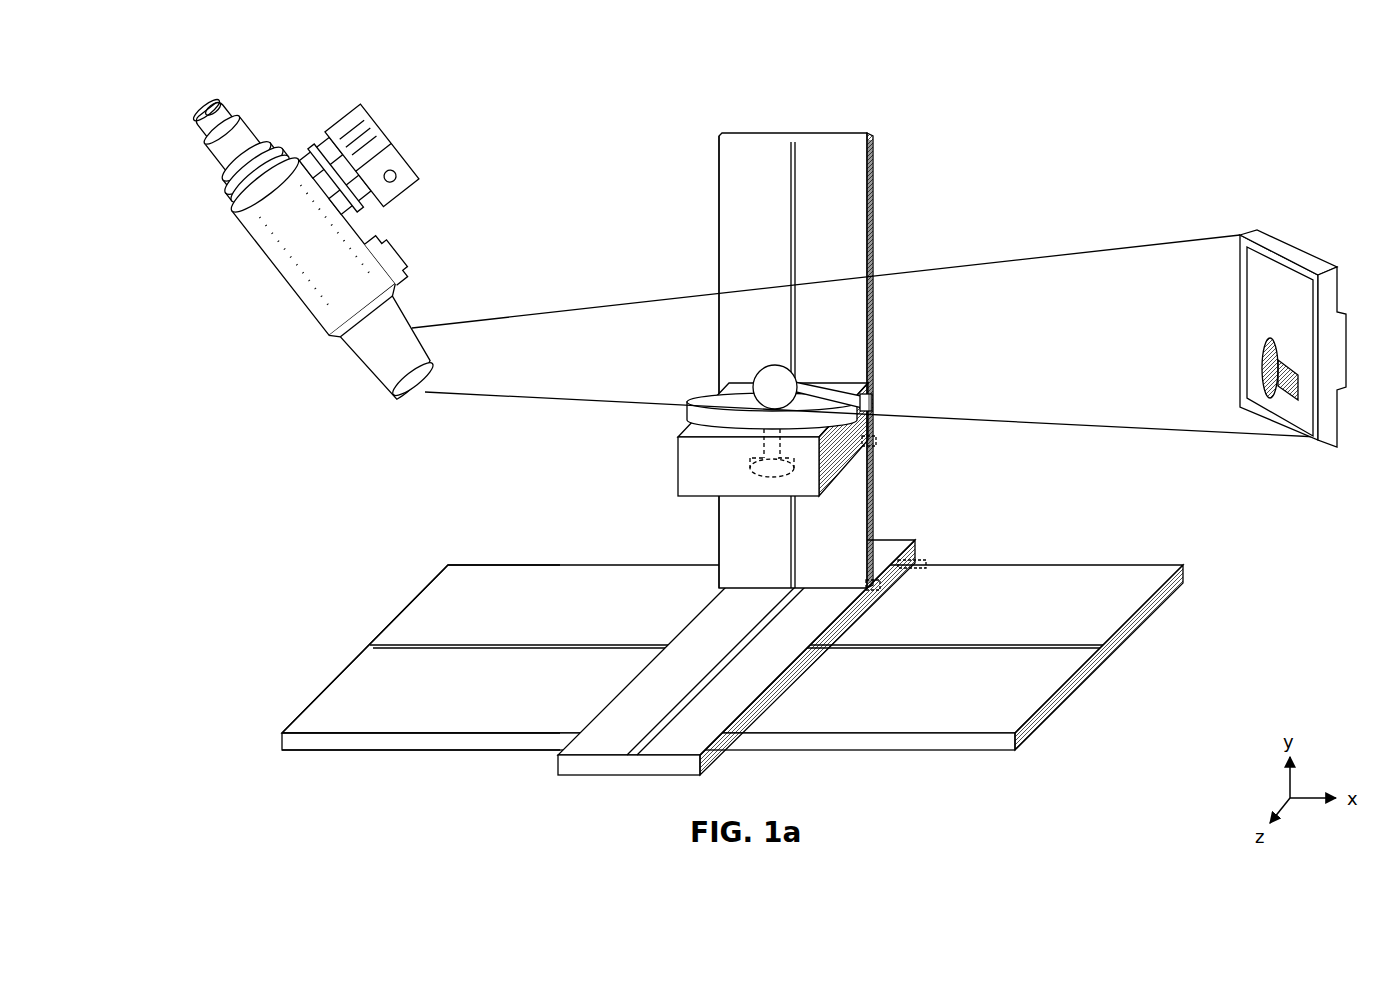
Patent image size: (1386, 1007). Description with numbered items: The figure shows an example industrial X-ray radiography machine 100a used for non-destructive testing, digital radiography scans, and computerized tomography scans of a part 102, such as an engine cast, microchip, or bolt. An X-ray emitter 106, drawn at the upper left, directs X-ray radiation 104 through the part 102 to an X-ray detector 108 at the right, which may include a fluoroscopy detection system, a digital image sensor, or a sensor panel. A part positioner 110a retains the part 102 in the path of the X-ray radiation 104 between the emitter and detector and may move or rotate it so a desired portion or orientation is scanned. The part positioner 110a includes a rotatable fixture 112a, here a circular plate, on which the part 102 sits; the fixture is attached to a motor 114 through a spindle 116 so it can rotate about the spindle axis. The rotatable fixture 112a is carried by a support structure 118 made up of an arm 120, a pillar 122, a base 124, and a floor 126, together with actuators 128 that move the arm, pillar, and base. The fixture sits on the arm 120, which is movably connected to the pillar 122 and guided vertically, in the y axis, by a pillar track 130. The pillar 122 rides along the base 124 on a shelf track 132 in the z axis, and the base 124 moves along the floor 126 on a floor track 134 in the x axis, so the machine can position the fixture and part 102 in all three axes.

The industrial X-ray radiography machine 100a is at (165, 112).
The X-ray emitter 106 is at (407, 123).
The part positioner 110a is at (823, 120).
The pillar 122 is at (705, 238).
The pillar track 130 is at (787, 240).
The X-ray radiation 104 is at (942, 258).
The X-ray detector 108 is at (1298, 238).
The part 102 is at (763, 366).
The rotatable fixture 112a is at (693, 392).
The arm 120 is at (675, 464).
The spindle 116 is at (765, 443).
The motor 114 is at (745, 467).
The actuators 128 is at (879, 440).
The support structure 118 is at (1037, 513).
The floor 126 is at (393, 612).
The floor track 134 is at (582, 638).
The base 124 is at (630, 778).
The shelf track 132 is at (728, 643).